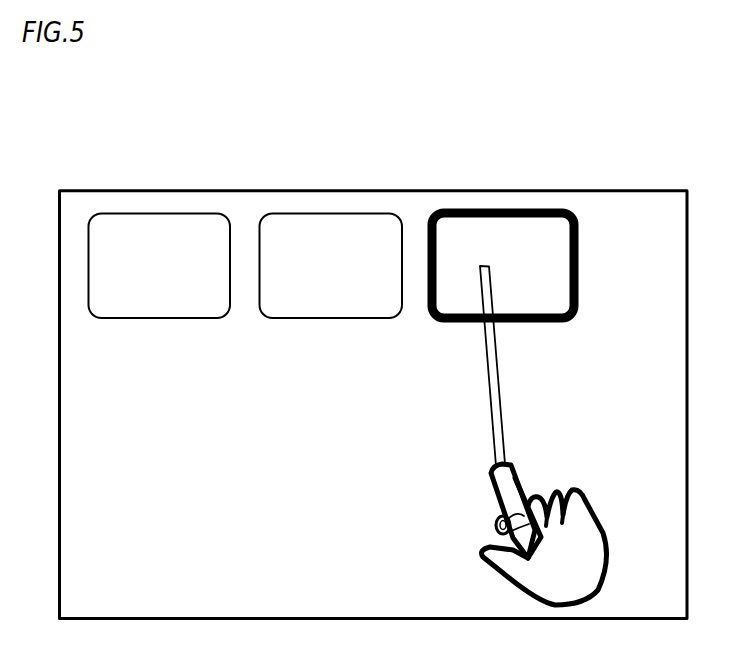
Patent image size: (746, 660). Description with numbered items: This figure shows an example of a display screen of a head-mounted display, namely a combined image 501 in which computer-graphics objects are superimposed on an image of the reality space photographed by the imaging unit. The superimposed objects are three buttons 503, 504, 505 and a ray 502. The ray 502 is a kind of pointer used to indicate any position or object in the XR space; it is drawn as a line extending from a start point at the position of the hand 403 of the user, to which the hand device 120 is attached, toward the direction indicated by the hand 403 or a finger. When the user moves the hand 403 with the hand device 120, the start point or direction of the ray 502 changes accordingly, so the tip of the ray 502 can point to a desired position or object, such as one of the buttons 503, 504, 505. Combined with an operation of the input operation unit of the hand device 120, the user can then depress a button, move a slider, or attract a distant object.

The combined image 501 is at (577, 189).
The ray 502 is at (504, 428).
The button 503 is at (190, 318).
The button 504 is at (355, 318).
The button 505 is at (532, 323).
The hand device 120 is at (495, 517).
The hand 403 is at (483, 547).